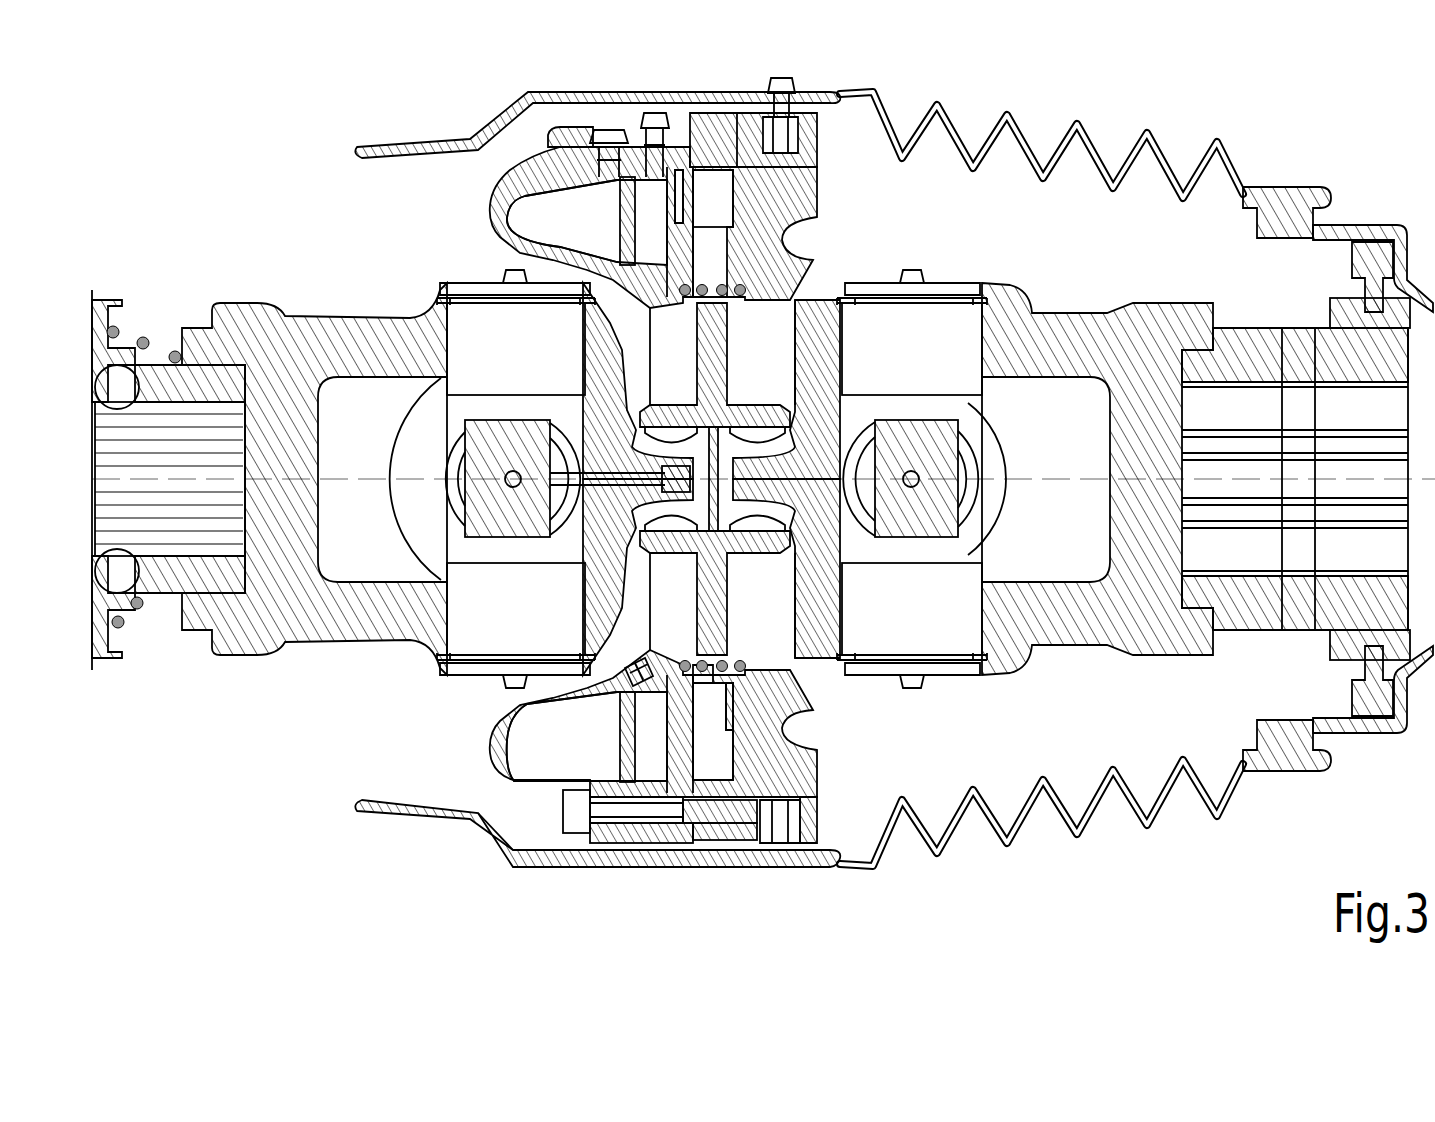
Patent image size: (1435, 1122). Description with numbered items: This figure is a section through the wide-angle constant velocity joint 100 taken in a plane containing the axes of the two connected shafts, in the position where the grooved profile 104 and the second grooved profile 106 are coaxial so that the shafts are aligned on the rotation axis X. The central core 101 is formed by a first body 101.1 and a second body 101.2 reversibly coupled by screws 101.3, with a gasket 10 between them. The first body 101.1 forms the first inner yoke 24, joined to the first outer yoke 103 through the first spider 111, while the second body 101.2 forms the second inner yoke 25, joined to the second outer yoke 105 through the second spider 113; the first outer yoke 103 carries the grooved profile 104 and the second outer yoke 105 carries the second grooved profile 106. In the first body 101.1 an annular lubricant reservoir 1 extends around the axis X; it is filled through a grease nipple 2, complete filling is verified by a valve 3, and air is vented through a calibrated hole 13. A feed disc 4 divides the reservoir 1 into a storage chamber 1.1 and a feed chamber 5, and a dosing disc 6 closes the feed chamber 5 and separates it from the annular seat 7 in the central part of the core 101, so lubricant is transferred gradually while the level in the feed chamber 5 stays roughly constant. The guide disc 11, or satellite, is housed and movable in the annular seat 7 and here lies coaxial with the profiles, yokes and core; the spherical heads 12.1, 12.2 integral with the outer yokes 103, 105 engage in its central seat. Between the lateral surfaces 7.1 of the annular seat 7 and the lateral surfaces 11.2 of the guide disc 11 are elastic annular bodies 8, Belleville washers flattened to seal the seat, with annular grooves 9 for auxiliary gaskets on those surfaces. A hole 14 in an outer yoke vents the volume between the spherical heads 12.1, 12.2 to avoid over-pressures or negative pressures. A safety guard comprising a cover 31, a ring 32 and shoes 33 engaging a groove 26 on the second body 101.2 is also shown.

The lubricant reservoir 1 is at (545, 203).
The storage chamber 1.1 is at (591, 234).
The grease nipple 2 is at (652, 115).
The valve 3 is at (603, 130).
The feed disc 4 is at (628, 275).
The feed chamber 5 is at (644, 245).
The dosing disc 6 is at (677, 757).
The annular seat 7 is at (720, 207).
The lateral surfaces of the annular seat 7.1 is at (727, 197).
The elastic annular bodies 8 is at (695, 250).
The annular grooves for auxiliary gaskets 9 is at (742, 296).
The gasket 10 is at (698, 122).
The guide disc 11 is at (695, 387).
The lateral surfaces of the guide disc 11.2 is at (695, 380).
The spherical head 12.1 is at (660, 534).
The spherical head 12.2 is at (755, 534).
The calibrated hole 13 is at (632, 660).
The hole 14 is at (617, 427).
The first inner yoke 24 is at (415, 452).
The second inner yoke 25 is at (998, 448).
The groove 26 is at (810, 795).
The cover 31 is at (1098, 797).
The ring 32 is at (517, 853).
The shoes 33 is at (798, 823).
The constant velocity joint 100 is at (1250, 100).
The central core 101 is at (662, 100).
The first body 101.1 is at (568, 130).
The second body 101.2 is at (745, 145).
The screws 101.3 is at (570, 813).
The first outer yoke 103 is at (335, 330).
The grooved profile 104 is at (163, 380).
The second outer yoke 105 is at (1112, 330).
The second grooved profile 106 is at (1253, 320).
The first spider 111 is at (458, 330).
The second spider 113 is at (955, 405).
The rotation axis X is at (1050, 482).